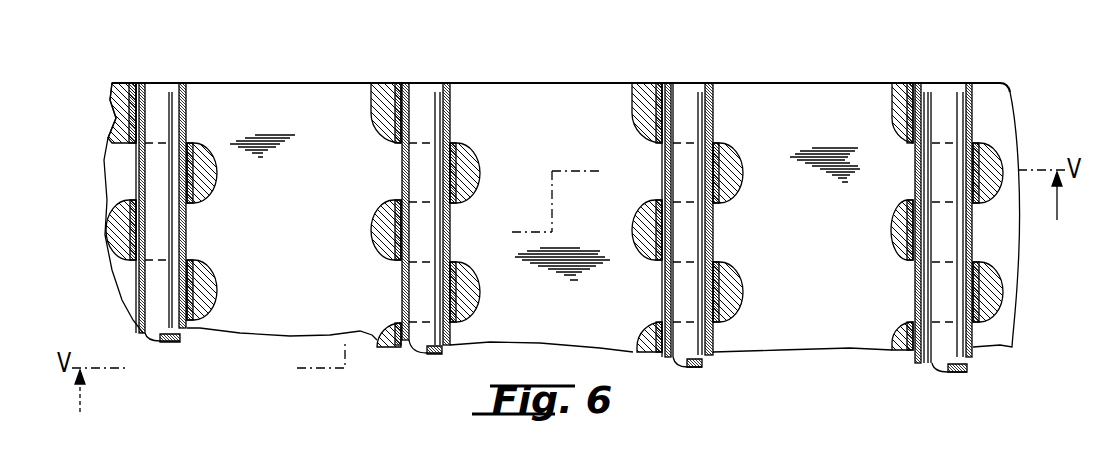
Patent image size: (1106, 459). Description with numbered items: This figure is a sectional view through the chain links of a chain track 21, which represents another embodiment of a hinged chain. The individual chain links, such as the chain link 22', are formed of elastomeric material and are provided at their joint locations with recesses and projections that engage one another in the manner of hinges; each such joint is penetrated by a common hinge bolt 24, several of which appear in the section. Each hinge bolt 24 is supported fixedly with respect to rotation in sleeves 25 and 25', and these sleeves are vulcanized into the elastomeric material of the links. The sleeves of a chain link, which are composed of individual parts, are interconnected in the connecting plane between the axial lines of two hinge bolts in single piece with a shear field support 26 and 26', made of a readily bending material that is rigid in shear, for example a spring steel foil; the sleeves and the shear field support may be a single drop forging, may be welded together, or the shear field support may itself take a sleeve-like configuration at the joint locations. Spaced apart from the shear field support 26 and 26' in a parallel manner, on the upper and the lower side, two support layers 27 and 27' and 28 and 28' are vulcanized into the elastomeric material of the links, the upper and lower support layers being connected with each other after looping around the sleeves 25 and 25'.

The chain track 21 is at (1008, 54).
The chain link 22' is at (756, 292).
The hinge bolt 24 is at (175, 333).
The sleeve 25 is at (700, 195).
The sleeve 25' is at (641, 223).
The shear field support 26 is at (368, 201).
The shear field support 26' is at (866, 193).
The support layer 27 is at (550, 171).
The support layer 28 is at (546, 171).
The support layer 27' is at (1028, 162).
The support layer 28' is at (998, 171).